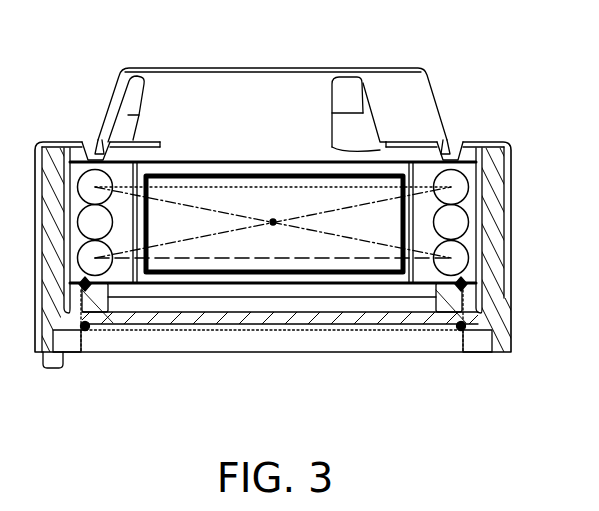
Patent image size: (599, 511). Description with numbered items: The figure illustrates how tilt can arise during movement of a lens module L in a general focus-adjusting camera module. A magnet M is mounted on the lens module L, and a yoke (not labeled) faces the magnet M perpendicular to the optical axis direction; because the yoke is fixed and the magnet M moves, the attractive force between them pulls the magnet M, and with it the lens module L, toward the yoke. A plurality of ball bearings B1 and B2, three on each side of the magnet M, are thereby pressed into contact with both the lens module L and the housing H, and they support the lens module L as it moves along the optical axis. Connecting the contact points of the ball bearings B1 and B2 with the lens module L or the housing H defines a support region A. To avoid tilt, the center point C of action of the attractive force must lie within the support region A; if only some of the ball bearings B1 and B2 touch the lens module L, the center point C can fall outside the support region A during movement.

The lens module L is at (397, 93).
The housing H is at (497, 320).
The magnet M is at (300, 268).
The support region A is at (288, 188).
The center point of action of attractive force C is at (272, 224).
The ball bearings B1 is at (462, 353).
The ball bearings B2 is at (83, 352).